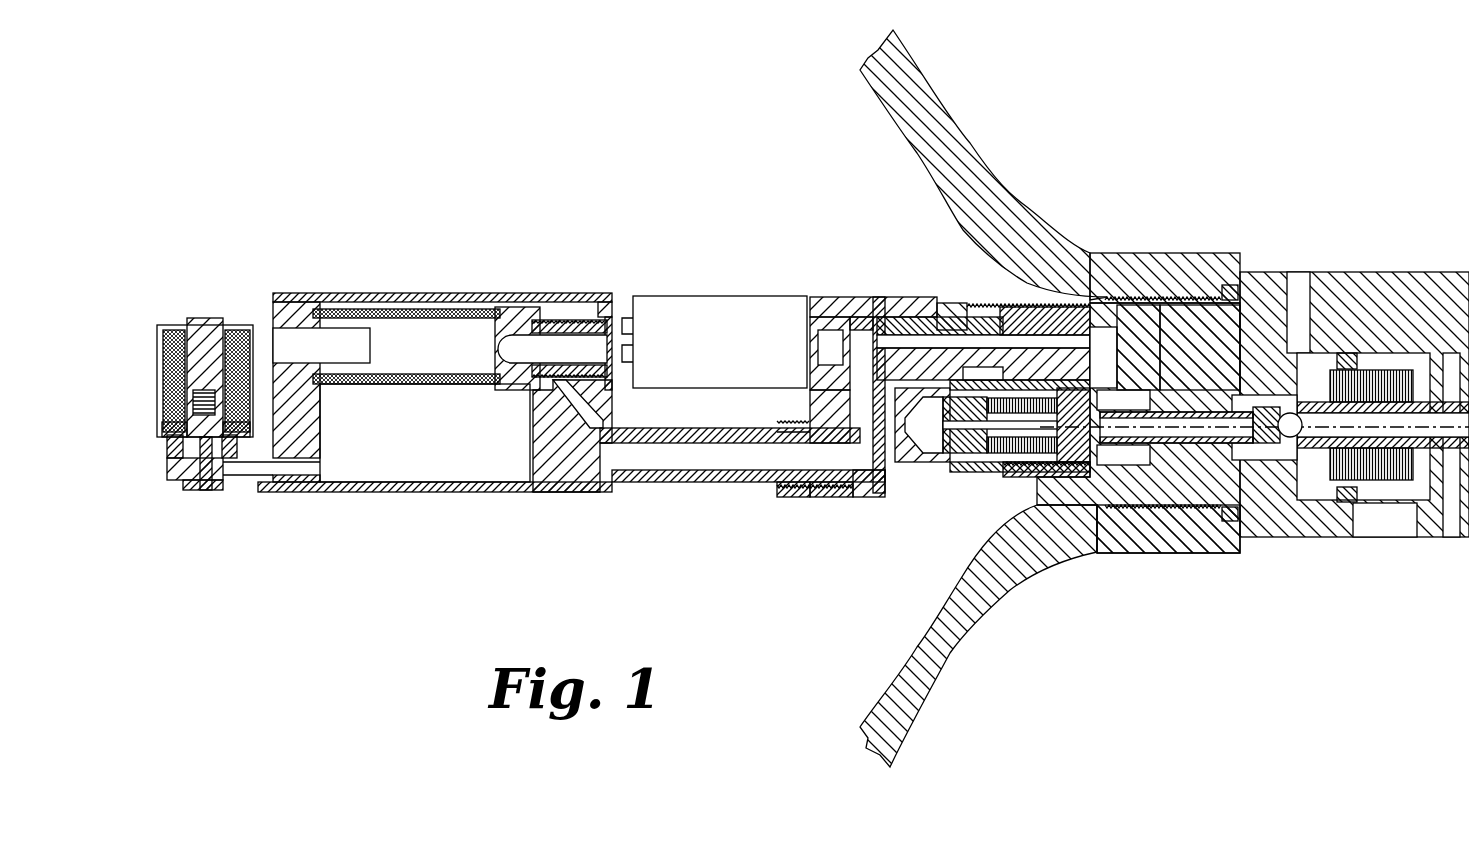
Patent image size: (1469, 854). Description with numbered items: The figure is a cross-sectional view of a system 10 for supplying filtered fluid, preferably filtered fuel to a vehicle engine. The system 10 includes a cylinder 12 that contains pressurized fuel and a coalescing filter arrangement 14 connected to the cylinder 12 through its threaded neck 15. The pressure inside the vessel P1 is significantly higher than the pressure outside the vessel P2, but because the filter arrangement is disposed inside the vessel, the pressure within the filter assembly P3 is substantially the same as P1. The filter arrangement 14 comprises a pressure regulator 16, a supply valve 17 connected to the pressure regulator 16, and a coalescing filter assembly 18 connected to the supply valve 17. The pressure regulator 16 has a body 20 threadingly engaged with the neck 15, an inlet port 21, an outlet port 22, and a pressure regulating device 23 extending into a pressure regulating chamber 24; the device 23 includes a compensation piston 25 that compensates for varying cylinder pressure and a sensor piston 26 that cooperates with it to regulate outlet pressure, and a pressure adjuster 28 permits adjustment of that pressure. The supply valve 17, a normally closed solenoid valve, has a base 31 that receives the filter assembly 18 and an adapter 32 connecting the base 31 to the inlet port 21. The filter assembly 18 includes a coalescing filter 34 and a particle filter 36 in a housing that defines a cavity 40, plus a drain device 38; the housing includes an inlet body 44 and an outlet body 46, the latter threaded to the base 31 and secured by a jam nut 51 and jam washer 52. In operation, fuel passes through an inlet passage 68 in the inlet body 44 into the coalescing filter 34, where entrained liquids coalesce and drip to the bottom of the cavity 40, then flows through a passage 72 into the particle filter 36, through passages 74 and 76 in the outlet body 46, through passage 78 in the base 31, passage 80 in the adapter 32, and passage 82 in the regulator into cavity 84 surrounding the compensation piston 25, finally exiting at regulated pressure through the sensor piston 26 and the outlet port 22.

The system 10 is at (1342, 118).
The cylinder 12 is at (968, 140).
The coalescing filter arrangement 14 is at (376, 565).
The threaded neck 15 is at (1220, 253).
The pressure regulator 16 is at (1421, 272).
The supply valve 17 is at (767, 297).
The coalescing filter assembly 18 is at (559, 504).
The body 20 is at (1035, 500).
The inlet port 21 is at (1080, 307).
The outlet port 22 is at (1362, 525).
The pressure regulating device 23 is at (1253, 445).
The pressure regulating chamber 24 is at (1258, 397).
The compensation piston 25 is at (1148, 440).
The sensor piston 26 is at (1283, 443).
The pressure adjuster 28 is at (957, 465).
The base 31 is at (897, 498).
The adapter 32 is at (950, 297).
The coalescing filter 34 is at (388, 309).
The particle filter 36 is at (575, 306).
The drain device 38 is at (165, 328).
The cavity 40 is at (393, 472).
The inlet body 44 is at (243, 490).
The outlet body 46 is at (713, 483).
The jam nut 51 is at (782, 497).
The jam washer 52 is at (805, 497).
The inlet passage 68 is at (262, 326).
The passage 72 is at (524, 345).
The passage 74 is at (580, 423).
The passage 76 is at (706, 437).
The passage 78 is at (870, 455).
The passage 80 is at (1033, 307).
The passage 82 is at (1137, 305).
The cavity 84 is at (1173, 305).
The pressure inside the vessel P1 is at (807, 667).
The pressure outside the vessel P2 is at (1080, 667).
The pressure within the filter assembly P3 is at (399, 382).